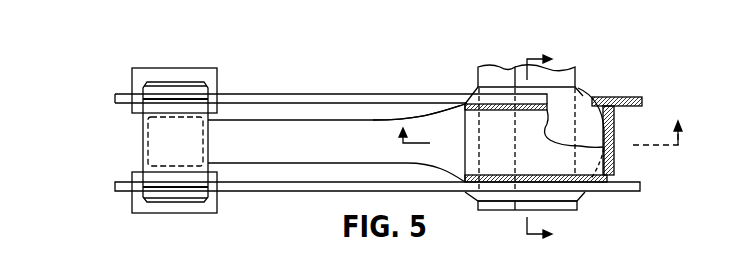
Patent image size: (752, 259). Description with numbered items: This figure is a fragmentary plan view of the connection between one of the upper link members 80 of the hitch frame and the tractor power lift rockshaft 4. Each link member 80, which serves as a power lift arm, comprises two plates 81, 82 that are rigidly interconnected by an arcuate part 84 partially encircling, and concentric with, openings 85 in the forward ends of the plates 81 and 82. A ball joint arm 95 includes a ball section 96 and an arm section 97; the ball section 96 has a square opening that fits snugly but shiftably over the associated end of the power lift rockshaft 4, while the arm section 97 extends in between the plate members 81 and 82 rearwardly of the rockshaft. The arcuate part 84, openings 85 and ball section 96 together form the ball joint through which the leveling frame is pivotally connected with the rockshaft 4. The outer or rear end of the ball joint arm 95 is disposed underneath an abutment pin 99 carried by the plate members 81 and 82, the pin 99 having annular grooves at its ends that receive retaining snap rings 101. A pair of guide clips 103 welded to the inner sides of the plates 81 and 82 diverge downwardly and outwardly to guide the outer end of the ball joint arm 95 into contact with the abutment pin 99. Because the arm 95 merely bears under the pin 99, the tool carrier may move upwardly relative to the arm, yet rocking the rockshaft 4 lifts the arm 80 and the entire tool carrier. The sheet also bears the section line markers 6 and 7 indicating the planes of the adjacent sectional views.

The upper link member 80 is at (352, 82).
The plate 81 is at (297, 100).
The plate 82 is at (302, 191).
The arcuate part 84 is at (596, 158).
The opening 85 is at (594, 97).
The ball joint arm 95 is at (375, 121).
The ball section 96 is at (553, 135).
The arm section 97 is at (253, 128).
The abutment pin 99 is at (155, 125).
The retaining snap ring 101 is at (141, 92).
The guide clip 103 is at (196, 73).
The power lift rockshaft 4 is at (560, 80).
The section line 6- 6 is at (547, 142).
The section line 7- 7 is at (540, 129).